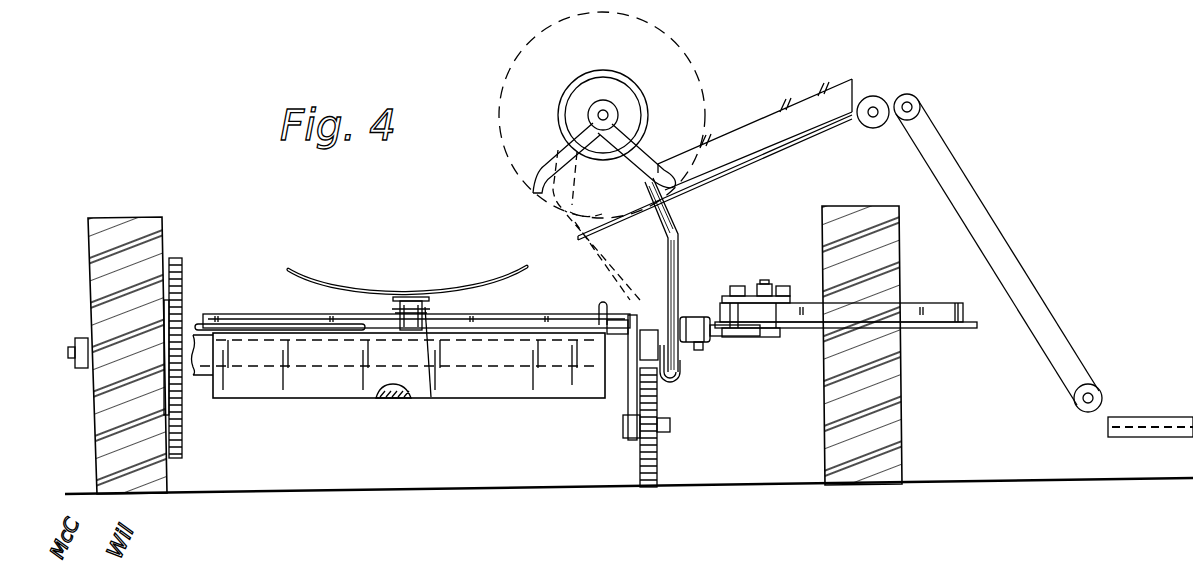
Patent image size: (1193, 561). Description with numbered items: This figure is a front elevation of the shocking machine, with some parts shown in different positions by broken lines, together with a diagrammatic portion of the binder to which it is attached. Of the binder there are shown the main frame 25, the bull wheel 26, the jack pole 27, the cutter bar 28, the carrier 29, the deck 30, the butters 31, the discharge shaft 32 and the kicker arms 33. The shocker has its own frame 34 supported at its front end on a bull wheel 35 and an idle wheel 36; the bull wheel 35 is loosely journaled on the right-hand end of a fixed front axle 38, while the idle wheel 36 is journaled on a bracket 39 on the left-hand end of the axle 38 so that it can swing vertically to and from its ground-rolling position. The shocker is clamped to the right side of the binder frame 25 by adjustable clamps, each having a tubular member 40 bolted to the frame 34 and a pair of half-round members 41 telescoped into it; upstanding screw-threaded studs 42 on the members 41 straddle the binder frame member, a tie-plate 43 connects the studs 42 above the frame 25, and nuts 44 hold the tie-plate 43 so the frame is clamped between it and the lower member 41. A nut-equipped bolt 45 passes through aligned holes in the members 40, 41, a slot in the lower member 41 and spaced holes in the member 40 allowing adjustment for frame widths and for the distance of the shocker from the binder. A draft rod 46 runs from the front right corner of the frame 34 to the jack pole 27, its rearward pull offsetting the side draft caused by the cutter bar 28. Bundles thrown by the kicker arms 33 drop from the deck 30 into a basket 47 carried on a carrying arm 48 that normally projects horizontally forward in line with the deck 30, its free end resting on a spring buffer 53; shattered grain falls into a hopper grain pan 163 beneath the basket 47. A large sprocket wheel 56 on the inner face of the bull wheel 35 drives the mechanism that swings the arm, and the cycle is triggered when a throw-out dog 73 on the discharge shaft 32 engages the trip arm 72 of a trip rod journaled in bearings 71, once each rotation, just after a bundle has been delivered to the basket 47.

The main frame 25 is at (943, 328).
The bull wheel 26 is at (895, 411).
The jack pole 27 is at (880, 300).
The cutter bar 28 is at (1110, 432).
The carrier 29 is at (1086, 359).
The deck 30 is at (849, 131).
The butters 31 is at (772, 128).
The discharge shaft 32 is at (608, 116).
The kicker arms 33 is at (538, 182).
The shocker frame 34 is at (527, 318).
The bull wheel 35 is at (165, 476).
The idle wheel 36 is at (655, 447).
The front axle 38 is at (333, 358).
The bracket 39 is at (632, 390).
The tubular clamp member 40 is at (708, 337).
The half-round clamp members 41 is at (735, 337).
The screw-threaded studs 42 is at (762, 286).
The tie-plate 43 is at (782, 297).
The nuts 44 is at (730, 293).
The nut-equipped bolt 45 is at (700, 350).
The draft rod 46 is at (278, 322).
The basket 47 is at (350, 285).
The carrying arm 48 is at (412, 294).
The spring buffer 53 is at (431, 398).
The large sprocket wheel 56 is at (182, 427).
The bearings 71 is at (673, 385).
The trip arm 72 is at (680, 244).
The throw-out dog 73 is at (634, 158).
The hopper grain pan 163 is at (390, 400).